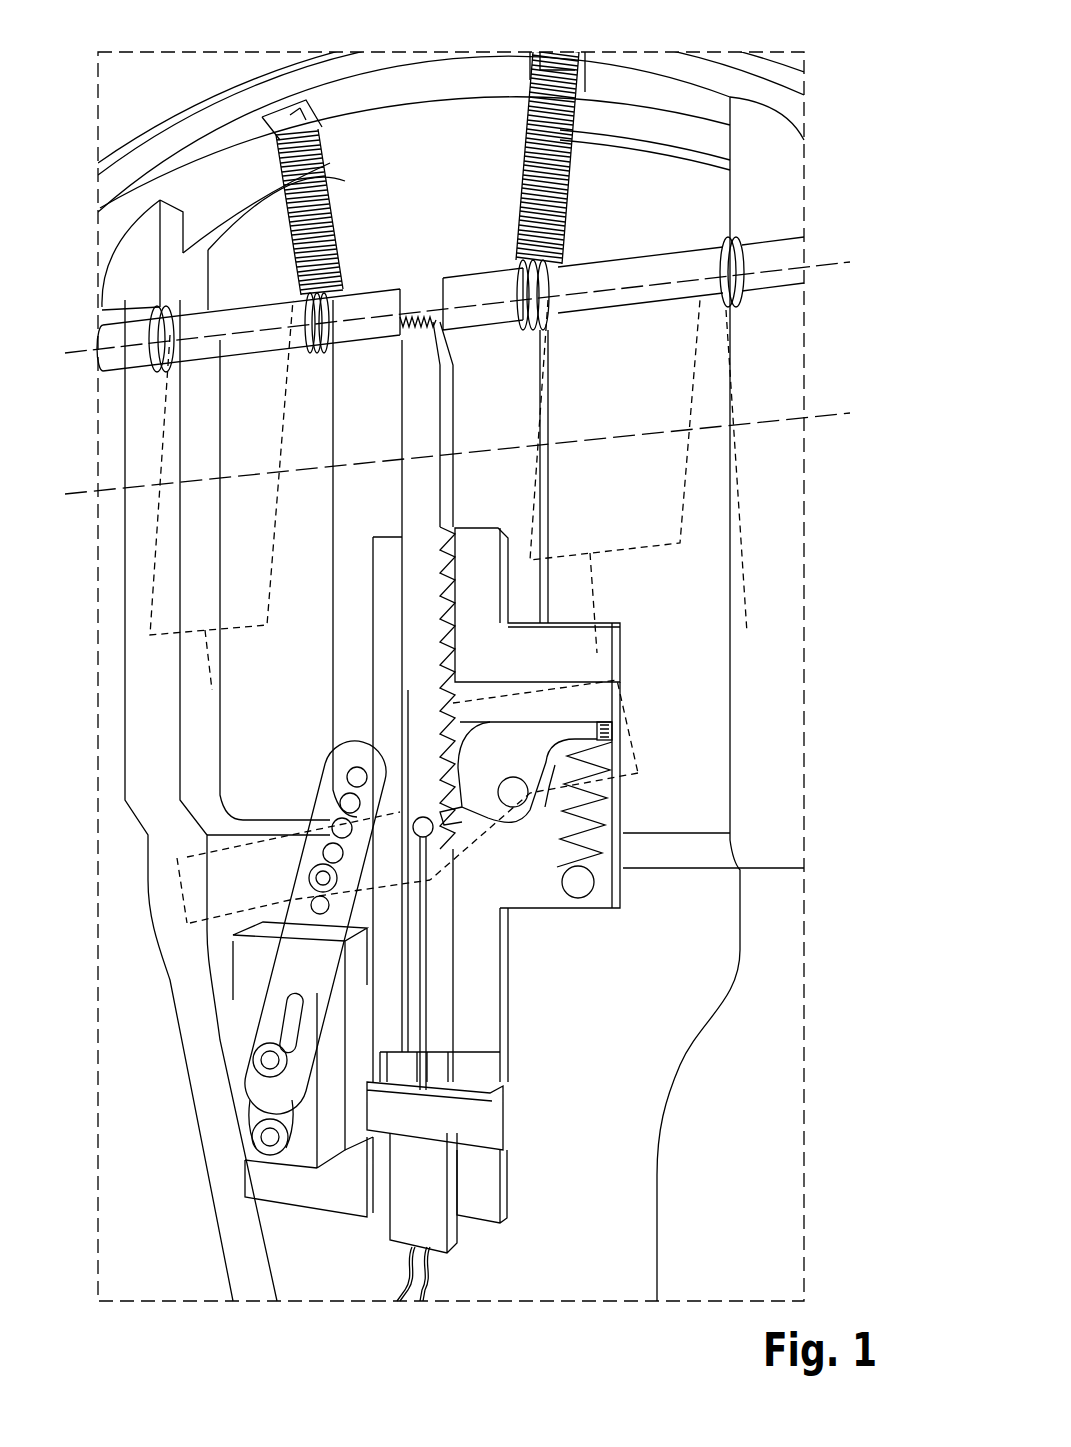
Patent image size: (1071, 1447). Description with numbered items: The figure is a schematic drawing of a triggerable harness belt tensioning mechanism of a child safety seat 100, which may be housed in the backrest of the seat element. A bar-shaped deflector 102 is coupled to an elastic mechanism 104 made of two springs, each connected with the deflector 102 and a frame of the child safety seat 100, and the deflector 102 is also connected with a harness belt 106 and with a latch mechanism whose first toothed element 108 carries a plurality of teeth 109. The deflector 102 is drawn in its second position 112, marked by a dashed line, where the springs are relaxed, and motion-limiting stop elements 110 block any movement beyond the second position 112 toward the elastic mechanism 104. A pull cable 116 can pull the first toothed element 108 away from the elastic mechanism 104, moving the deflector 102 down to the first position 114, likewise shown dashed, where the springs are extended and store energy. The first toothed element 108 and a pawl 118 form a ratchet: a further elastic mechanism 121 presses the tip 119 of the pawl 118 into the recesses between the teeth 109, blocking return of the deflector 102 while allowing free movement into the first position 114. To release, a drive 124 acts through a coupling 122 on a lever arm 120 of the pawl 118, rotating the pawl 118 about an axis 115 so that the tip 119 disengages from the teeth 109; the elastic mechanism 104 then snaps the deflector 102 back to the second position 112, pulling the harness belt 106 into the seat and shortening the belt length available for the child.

The child safety seat 100 is at (832, 84).
The deflector 102 is at (790, 241).
The elastic mechanism 104 is at (335, 243).
The harness belt 106 is at (650, 515).
The first toothed element 108 is at (418, 654).
The teeth 109 is at (454, 650).
The motion-limiting stop elements 110 is at (168, 308).
The second position 112 is at (848, 260).
The first position 114 is at (845, 413).
The axis 115 is at (470, 815).
The pull cable 116 is at (430, 1066).
The pawl 118 is at (554, 735).
The tip 119 is at (512, 802).
The lever arm 120 is at (217, 886).
The further elastic mechanism 121 is at (603, 820).
The coupling 122 is at (286, 974).
The drive 124 is at (253, 1147).